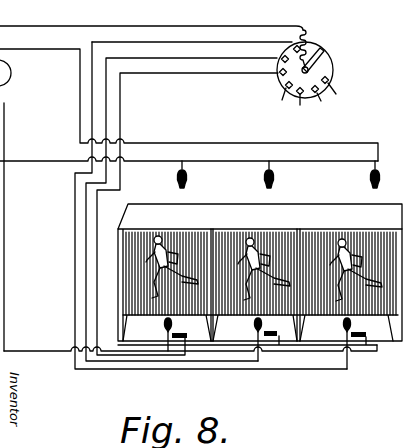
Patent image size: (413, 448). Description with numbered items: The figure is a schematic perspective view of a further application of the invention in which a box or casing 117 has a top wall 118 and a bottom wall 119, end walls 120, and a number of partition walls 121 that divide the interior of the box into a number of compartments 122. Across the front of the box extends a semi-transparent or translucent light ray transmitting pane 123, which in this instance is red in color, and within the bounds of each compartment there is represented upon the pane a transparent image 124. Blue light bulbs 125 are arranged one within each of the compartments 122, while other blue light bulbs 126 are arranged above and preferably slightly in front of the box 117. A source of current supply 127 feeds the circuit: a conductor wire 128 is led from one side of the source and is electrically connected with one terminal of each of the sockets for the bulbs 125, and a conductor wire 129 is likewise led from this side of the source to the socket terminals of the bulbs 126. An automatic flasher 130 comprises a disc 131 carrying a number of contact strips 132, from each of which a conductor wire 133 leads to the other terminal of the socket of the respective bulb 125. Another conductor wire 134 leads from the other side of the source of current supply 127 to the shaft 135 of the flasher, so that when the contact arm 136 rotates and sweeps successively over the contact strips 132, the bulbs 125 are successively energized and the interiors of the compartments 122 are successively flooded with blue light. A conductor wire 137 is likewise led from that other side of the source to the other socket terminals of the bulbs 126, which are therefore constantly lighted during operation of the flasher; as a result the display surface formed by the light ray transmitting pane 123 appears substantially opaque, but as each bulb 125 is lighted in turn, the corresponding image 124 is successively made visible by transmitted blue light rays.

The box or casing 117 is at (325, 219).
The top wall 118 is at (238, 212).
The bottom wall 119 is at (237, 330).
The end walls 120 is at (118, 270).
The partition walls 121 is at (218, 325).
The compartments 122 is at (185, 339).
The light ray transmitting pane 123 is at (142, 240).
The image 124 is at (169, 251).
The blue light bulbs 125 is at (279, 346).
The blue light bulbs 126 is at (278, 183).
The source of current supply 127 is at (4, 78).
The conductor wire 128 is at (36, 350).
The conductor wire 129 is at (42, 160).
The automatic flasher 130 is at (334, 75).
The disc 131 is at (323, 42).
The contact strips 132 is at (335, 97).
The conductor wire 133 is at (261, 43).
The conductor wire 134 is at (118, 26).
The shaft 135 is at (309, 70).
The contact arm 136 is at (323, 55).
The conductor wire 137 is at (50, 50).